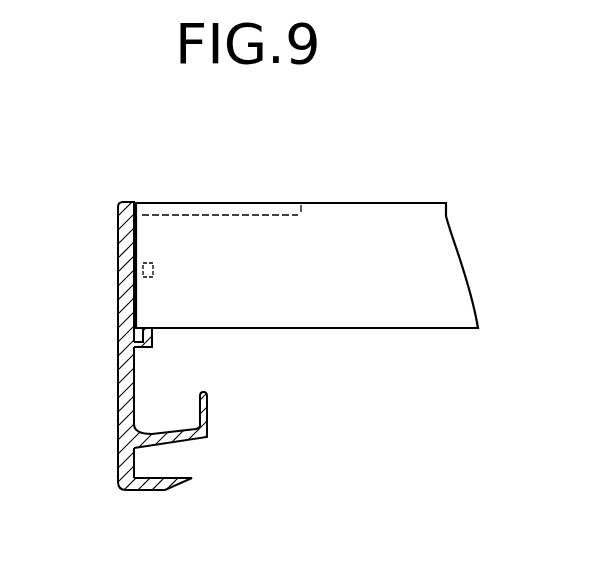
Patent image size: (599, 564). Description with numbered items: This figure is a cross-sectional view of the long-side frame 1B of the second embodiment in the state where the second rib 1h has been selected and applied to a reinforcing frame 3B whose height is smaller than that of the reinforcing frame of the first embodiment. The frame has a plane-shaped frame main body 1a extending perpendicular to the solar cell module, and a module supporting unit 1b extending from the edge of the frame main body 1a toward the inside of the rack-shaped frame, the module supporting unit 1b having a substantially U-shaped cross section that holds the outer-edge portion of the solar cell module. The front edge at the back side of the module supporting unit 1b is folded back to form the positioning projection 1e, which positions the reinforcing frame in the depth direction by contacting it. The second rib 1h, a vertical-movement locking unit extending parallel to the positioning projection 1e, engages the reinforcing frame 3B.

The long-side frame 1B is at (118, 252).
The frame main body 1a is at (118, 360).
The second rib 1h is at (153, 342).
The positioning projection 1e is at (207, 404).
The module supporting unit 1b is at (135, 461).
The reinforcing frame 3B is at (367, 203).